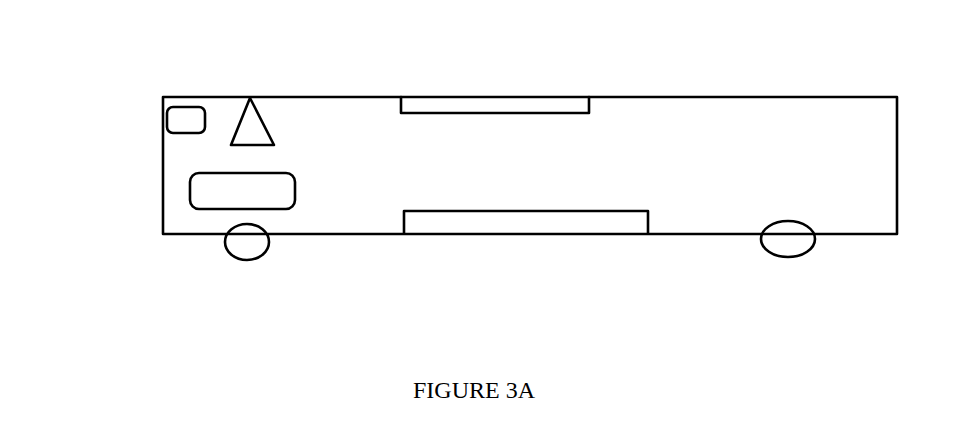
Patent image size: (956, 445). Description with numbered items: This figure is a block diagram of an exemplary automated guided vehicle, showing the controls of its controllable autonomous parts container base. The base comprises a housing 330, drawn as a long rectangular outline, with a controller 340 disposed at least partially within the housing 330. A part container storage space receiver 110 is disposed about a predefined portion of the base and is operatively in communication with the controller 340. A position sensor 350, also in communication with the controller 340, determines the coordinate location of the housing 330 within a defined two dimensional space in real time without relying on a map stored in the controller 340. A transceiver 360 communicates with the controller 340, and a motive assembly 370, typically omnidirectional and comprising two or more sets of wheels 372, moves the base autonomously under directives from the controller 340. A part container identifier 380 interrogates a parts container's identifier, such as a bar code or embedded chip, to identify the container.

The part container storage space receiver 110 is at (480, 70).
The housing 330 is at (657, 96).
The controller 340 is at (178, 123).
The position sensor 350 is at (487, 230).
The transceiver 360 is at (253, 123).
The motive assembly 370 is at (220, 195).
The wheels 372 is at (260, 246).
The part container identifier 380 is at (417, 102).